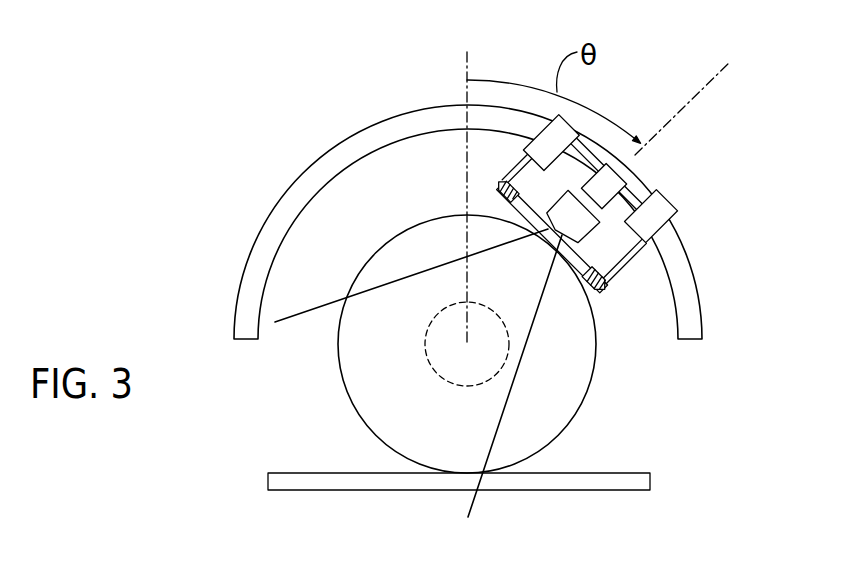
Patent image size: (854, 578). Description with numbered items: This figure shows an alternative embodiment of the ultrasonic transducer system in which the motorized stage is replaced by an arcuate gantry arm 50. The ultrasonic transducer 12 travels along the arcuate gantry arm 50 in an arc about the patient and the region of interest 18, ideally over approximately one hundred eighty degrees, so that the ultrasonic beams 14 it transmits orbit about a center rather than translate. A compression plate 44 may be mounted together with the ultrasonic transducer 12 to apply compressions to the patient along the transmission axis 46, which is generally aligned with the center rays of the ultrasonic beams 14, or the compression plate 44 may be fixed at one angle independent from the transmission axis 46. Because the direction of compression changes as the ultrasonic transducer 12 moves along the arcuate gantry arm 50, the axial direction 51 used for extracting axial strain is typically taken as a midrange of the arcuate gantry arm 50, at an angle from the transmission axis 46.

The ultrasonic transducer 12 is at (572, 217).
The ultrasonic beams 14 is at (505, 267).
The region of interest 18 is at (505, 377).
The compression plate 44 is at (601, 288).
The transmission axis 46 is at (680, 110).
The arcuate gantry arm 50 is at (346, 158).
The axial direction 51 is at (466, 70).